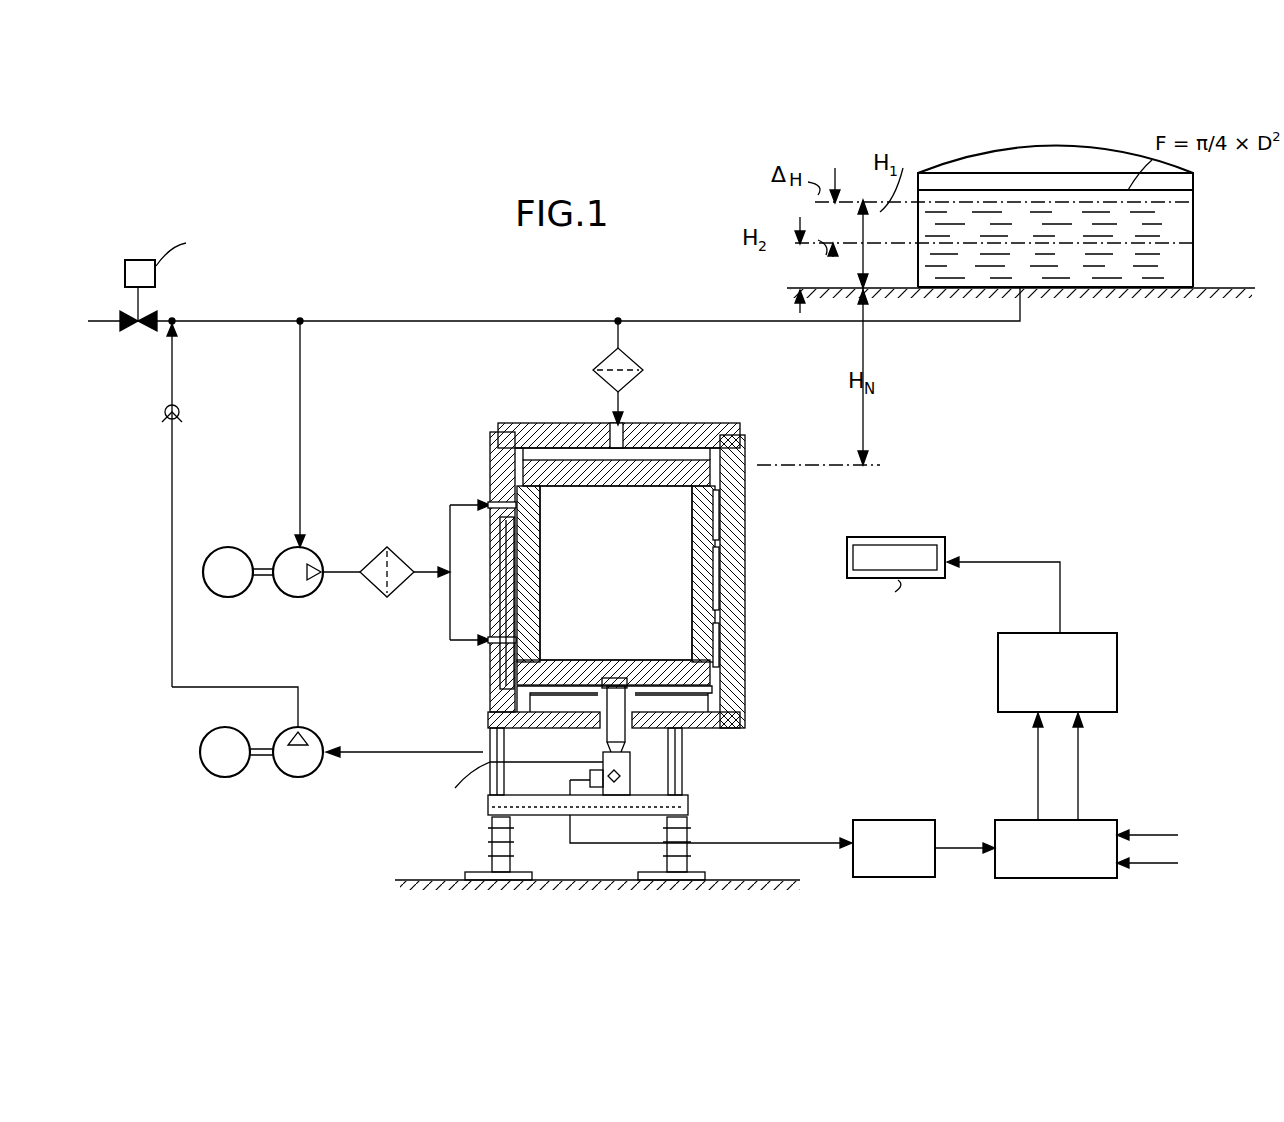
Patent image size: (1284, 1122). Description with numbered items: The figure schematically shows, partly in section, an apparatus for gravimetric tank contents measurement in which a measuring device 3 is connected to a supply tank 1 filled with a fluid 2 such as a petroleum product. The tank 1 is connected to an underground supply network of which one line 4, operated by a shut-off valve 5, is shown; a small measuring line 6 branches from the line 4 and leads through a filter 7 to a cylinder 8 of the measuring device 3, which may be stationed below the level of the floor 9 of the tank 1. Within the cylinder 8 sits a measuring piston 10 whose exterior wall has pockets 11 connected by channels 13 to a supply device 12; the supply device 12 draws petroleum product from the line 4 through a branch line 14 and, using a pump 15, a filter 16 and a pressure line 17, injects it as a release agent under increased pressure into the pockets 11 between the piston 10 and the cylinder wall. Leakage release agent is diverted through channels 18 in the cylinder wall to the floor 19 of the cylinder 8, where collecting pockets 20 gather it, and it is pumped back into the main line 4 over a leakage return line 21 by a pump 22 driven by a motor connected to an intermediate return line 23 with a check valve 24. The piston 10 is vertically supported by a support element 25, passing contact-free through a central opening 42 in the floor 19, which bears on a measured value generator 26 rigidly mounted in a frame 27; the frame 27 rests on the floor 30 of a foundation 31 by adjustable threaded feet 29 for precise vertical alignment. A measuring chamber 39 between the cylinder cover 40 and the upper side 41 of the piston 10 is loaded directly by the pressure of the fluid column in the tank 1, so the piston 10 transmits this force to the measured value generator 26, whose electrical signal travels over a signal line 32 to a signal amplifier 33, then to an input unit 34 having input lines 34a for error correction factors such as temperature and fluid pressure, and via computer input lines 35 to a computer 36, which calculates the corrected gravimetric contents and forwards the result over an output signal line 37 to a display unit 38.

The supply tank 1 is at (1200, 230).
The fluid 2 is at (1178, 253).
The measuring device 3 is at (631, 556).
The line 4 is at (493, 320).
The shut-off valve 5 is at (142, 300).
The measuring line 6 is at (622, 340).
The filter 7 is at (632, 381).
The cylinder 8 is at (748, 447).
The floor 9 is at (1130, 283).
The measuring piston 10 is at (633, 585).
The pockets 11 is at (714, 635).
The supply device 12 is at (323, 545).
The channels 13 is at (490, 500).
The branch line 14 is at (301, 452).
The pump 15 is at (298, 588).
The filter 16 is at (395, 590).
The pressure line 17 is at (450, 528).
The channels 18 is at (492, 548).
The floor 19 is at (741, 728).
The collecting pockets 20 is at (690, 712).
The leakage return line 21 is at (398, 752).
The pump 22 is at (292, 760).
The intermediate return line 23 is at (173, 518).
The check valve 24 is at (179, 420).
The support element 25 is at (606, 727).
The measured value generator 26 is at (598, 763).
The frame 27 is at (683, 795).
The adjustable threaded feet 29 is at (686, 855).
The floor 30 is at (560, 878).
The foundation 31 is at (620, 868).
The signal line 32 is at (775, 843).
The signal amplifier 33 is at (912, 820).
The input unit 34 is at (1012, 822).
The input lines 34a is at (1150, 863).
The computer input lines 35 is at (1078, 777).
The computer 36 is at (1120, 647).
The output signal line 37 is at (1007, 561).
The display unit 38 is at (900, 535).
The measuring chamber 39 is at (667, 457).
The cylinder cover 40 is at (550, 432).
The upper side 41 is at (572, 473).
The central opening 42 is at (642, 732).